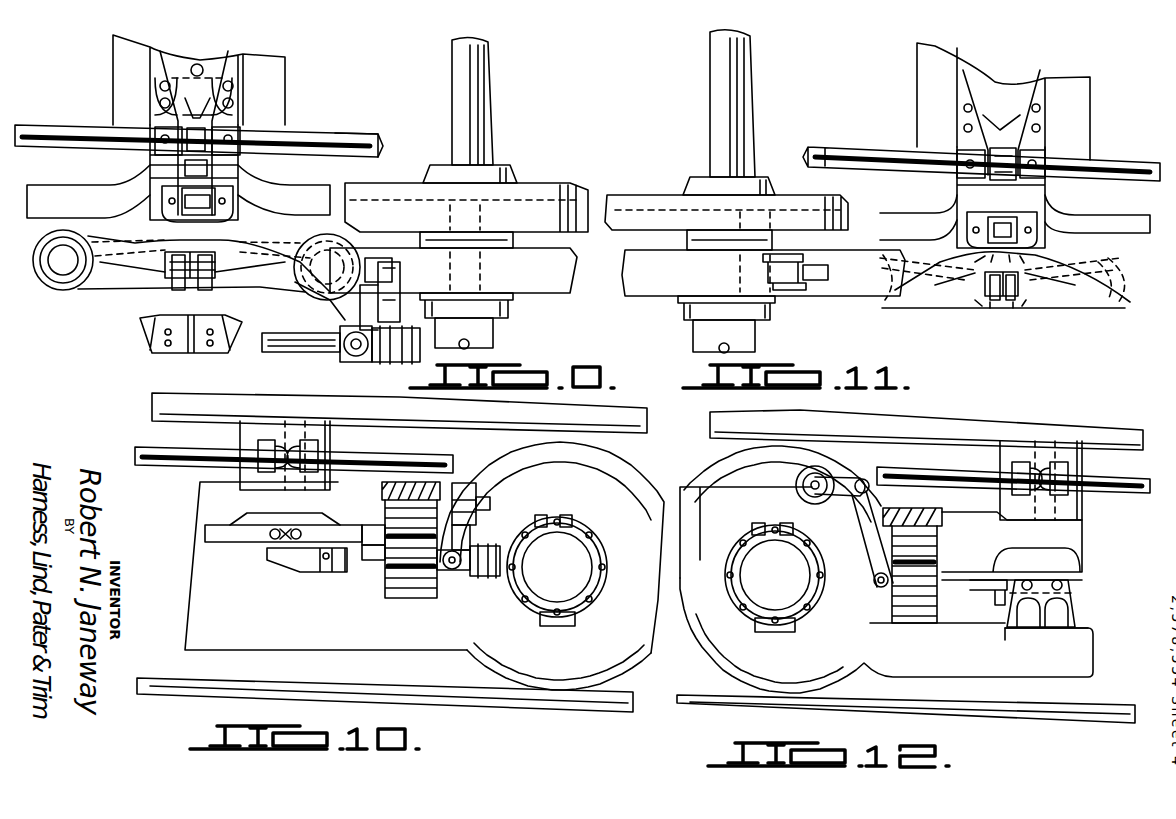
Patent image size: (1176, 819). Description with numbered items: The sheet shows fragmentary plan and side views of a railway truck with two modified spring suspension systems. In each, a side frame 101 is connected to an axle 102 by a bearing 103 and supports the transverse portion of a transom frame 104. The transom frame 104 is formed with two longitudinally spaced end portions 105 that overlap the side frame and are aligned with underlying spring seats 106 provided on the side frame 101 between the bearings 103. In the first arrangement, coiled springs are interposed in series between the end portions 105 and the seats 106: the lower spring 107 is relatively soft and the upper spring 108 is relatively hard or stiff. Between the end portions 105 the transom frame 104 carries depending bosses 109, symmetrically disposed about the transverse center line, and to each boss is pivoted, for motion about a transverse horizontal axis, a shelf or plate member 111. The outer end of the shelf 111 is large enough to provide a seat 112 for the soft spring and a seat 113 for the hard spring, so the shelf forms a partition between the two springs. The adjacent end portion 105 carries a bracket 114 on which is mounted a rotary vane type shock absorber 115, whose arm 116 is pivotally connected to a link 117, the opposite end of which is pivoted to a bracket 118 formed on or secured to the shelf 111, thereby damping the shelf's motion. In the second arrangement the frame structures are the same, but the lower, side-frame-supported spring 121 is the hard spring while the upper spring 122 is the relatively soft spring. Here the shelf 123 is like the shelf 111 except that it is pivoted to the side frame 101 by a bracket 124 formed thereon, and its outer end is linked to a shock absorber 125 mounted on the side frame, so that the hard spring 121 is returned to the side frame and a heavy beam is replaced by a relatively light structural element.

In FIG. 9, the side frame 101 is at (543, 286).
In FIG. 11, the side frame 101 is at (654, 288).
In FIG. 10, the side frame 101 is at (385, 646).
In FIG. 12, the side frame 101 is at (905, 672).
In FIG. 9, the axle 102 is at (452, 104).
In FIG. 9, the bearing 103 is at (510, 336).
In FIG. 11, the bearing 103 is at (726, 324).
In FIG. 10, the bearing 103 is at (540, 618).
In FIG. 12, the bearing 103 is at (775, 577).
In FIG. 9, the transom frame 104 is at (280, 70).
In FIG. 10, the transom frame 104 is at (294, 456).
In FIG. 12, the transom frame 104 is at (1098, 490).
In FIG. 9, the end portions 105 is at (292, 300).
In FIG. 10, the end portions 105 is at (432, 484).
In FIG. 10, the spring seats 106 is at (392, 597).
In FIG. 10, the lower spring 107 is at (388, 572).
In FIG. 10, the upper spring 108 is at (380, 524).
In FIG. 9, the depending bosses 109 is at (196, 290).
In FIG. 10, the depending bosses 109 is at (306, 525).
In FIG. 9, the shelf or plate member 111 is at (137, 290).
In FIG. 10, the shelf or plate member 111 is at (238, 522).
In FIG. 10, the seat for soft spring 112 is at (335, 570).
In FIG. 10, the seat for hard spring 113 is at (384, 532).
In FIG. 9, the bracket 114 is at (345, 322).
In FIG. 9, the rotary vane type shock absorber 115 is at (327, 267).
In FIG. 10, the rotary vane type shock absorber 115 is at (470, 482).
In FIG. 9, the arm 116 is at (400, 292).
In FIG. 10, the arm 116 is at (490, 503).
In FIG. 9, the link 117 is at (393, 268).
In FIG. 9, the bracket 118 is at (372, 284).
In FIG. 12, the lower spring 121 is at (936, 598).
In FIG. 12, the upper spring 122 is at (940, 549).
In FIG. 11, the shelf 123 is at (932, 296).
In FIG. 12, the shelf 123 is at (1078, 586).
In FIG. 11, the bracket 124 is at (1000, 300).
In FIG. 12, the bracket 124 is at (1040, 629).
In FIG. 11, the shock absorber 125 is at (764, 267).
In FIG. 12, the shock absorber 125 is at (796, 473).